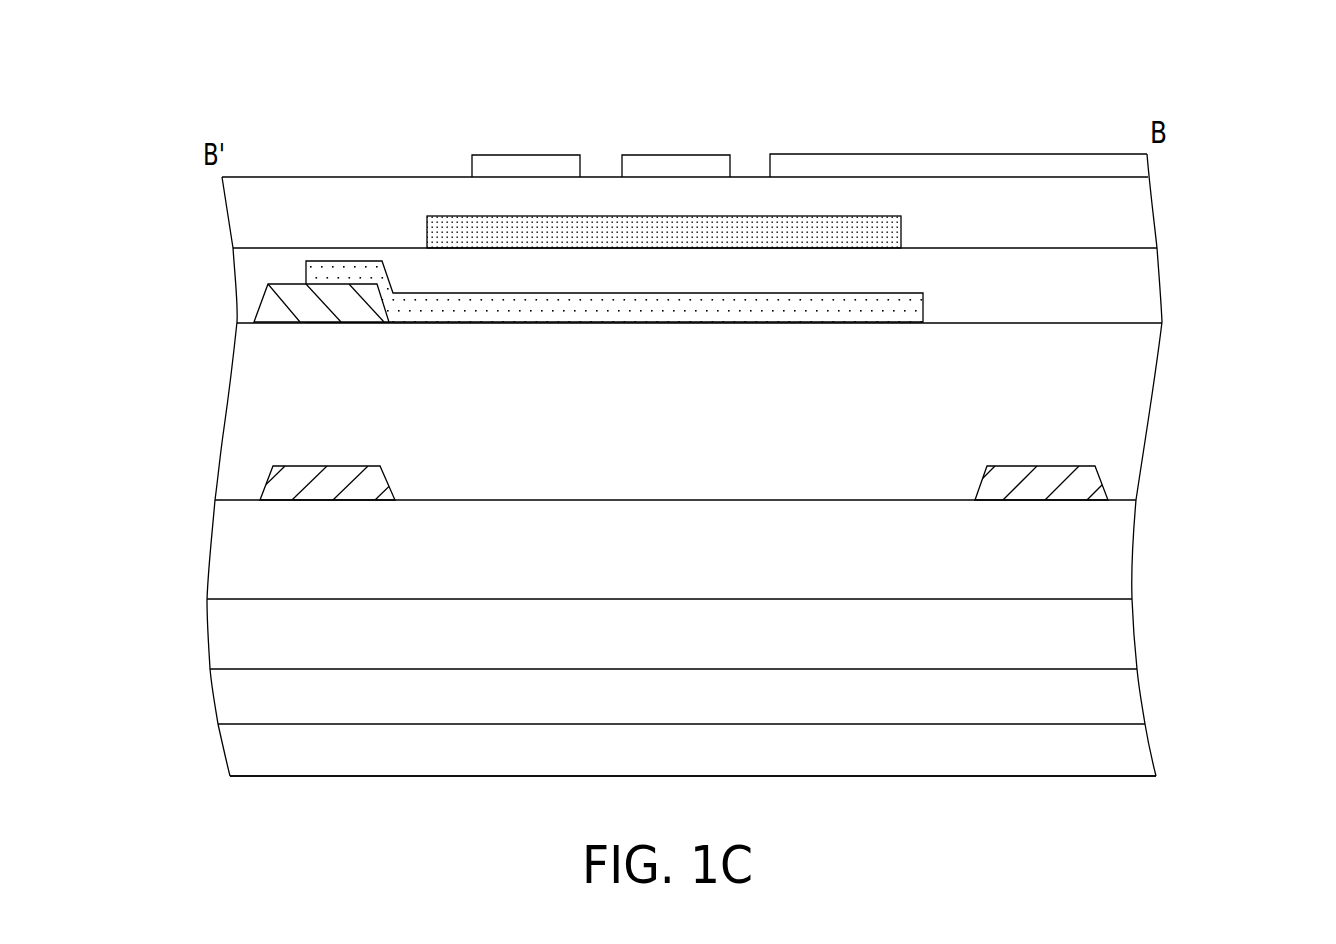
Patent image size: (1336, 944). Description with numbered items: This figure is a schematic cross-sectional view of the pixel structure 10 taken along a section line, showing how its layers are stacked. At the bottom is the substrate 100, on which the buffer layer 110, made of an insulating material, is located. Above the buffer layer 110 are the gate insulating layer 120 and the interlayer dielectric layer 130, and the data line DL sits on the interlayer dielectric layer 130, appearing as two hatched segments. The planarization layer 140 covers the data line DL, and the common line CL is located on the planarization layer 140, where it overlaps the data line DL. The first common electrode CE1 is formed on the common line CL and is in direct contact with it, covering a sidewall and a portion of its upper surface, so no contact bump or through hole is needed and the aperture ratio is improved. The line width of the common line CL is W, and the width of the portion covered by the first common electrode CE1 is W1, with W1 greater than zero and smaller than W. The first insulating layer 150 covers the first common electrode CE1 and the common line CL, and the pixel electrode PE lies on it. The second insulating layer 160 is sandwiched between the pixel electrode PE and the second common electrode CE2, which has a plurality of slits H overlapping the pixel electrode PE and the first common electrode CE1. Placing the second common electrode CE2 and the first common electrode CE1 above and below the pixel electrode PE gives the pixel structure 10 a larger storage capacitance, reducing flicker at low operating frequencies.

The pixel structure 10 is at (1231, 806).
The substrate 100 is at (257, 752).
The buffer layer 110 is at (247, 694).
The gate insulating layer 120 is at (247, 639).
The interlayer dielectric layer 130 is at (247, 565).
The planarization layer 140 is at (245, 401).
The first insulating layer 150 is at (245, 266).
The second insulating layer 160 is at (245, 205).
The common line CL is at (277, 309).
The data line DL is at (283, 484).
The first common electrode CE1 is at (900, 310).
The second common electrode CE2 is at (1127, 169).
The pixel electrode PE is at (880, 230).
The slits H is at (752, 152).
The line width of the common line W is at (390, 322).
The width of the portion of the common line covered by the first common electrode W1 is at (382, 261).